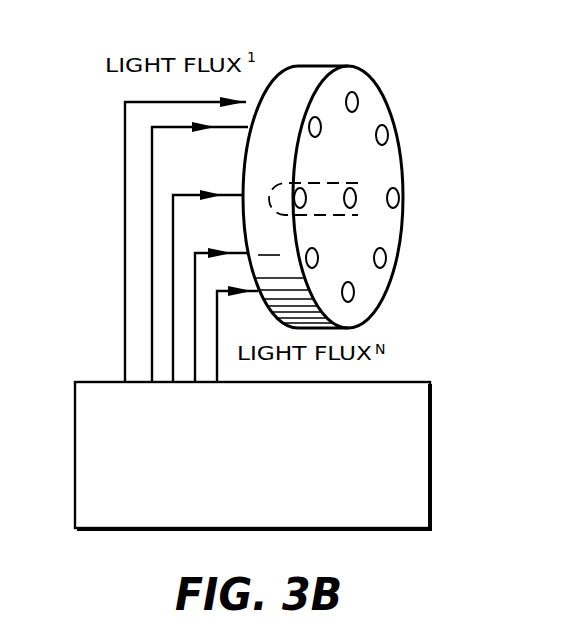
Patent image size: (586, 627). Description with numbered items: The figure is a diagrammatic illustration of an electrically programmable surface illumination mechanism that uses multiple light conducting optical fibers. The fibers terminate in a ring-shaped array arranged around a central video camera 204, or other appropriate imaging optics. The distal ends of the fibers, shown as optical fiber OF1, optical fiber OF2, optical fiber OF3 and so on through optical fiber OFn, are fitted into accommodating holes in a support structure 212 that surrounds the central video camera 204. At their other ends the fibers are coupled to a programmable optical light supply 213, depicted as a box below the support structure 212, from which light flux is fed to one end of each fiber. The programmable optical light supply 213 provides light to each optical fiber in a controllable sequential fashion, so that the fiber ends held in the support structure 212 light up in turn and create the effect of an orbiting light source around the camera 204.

The central video camera 204 is at (357, 206).
The support structure 212 is at (387, 290).
The programmable optical light supply (POLS) 213 is at (100, 382).
The optical fiber OFn is at (315, 117).
The optical fiber OF1 is at (358, 101).
The optical fiber OF2 is at (388, 133).
The optical fiber OF3 is at (399, 198).